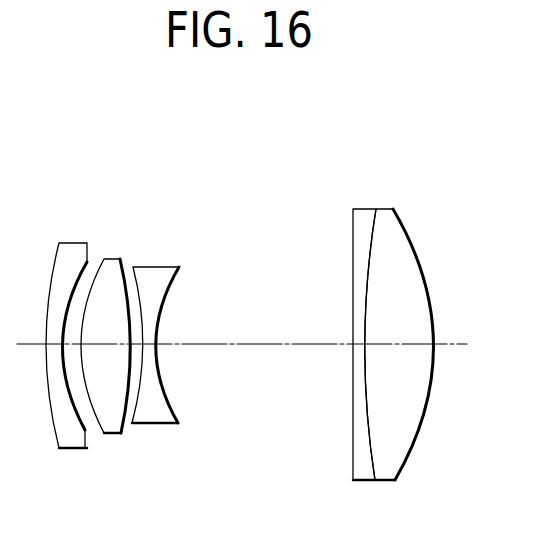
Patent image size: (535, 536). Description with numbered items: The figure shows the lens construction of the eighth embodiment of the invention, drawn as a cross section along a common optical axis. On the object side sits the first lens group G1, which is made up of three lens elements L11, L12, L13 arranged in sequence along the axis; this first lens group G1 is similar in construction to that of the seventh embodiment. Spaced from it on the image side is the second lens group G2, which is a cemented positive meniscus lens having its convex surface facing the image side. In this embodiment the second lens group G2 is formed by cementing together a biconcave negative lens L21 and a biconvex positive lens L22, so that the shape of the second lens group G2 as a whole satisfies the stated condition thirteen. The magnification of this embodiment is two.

The first lens group G1 is at (182, 138).
The second lens group G2 is at (418, 138).
The first lens of first group (negative meniscus) L11 is at (73, 242).
The second lens of first group (biconvex) L12 is at (111, 257).
The third lens of first group (biconcave) L13 is at (155, 265).
The biconcave negative lens L21 is at (362, 208).
The biconvex positive lens L22 is at (390, 208).